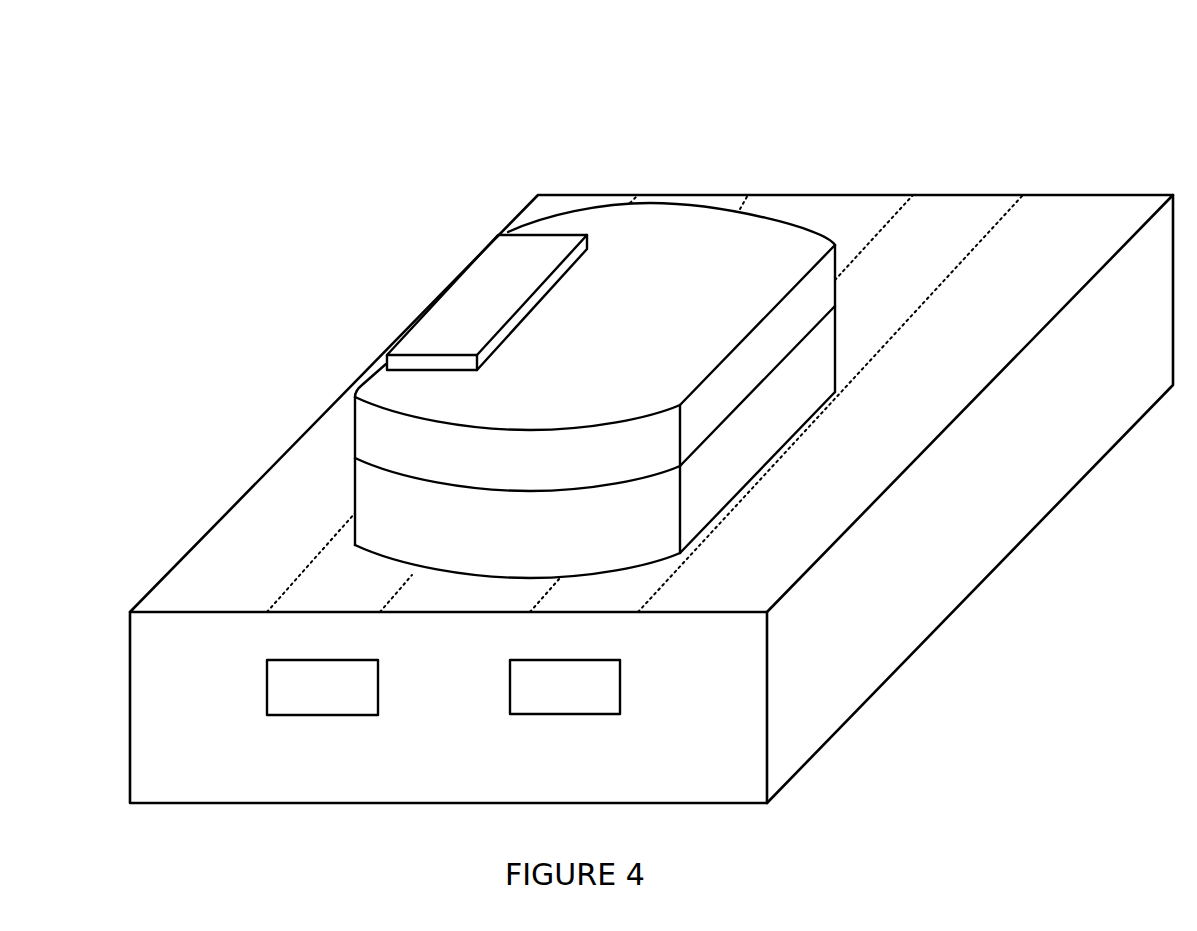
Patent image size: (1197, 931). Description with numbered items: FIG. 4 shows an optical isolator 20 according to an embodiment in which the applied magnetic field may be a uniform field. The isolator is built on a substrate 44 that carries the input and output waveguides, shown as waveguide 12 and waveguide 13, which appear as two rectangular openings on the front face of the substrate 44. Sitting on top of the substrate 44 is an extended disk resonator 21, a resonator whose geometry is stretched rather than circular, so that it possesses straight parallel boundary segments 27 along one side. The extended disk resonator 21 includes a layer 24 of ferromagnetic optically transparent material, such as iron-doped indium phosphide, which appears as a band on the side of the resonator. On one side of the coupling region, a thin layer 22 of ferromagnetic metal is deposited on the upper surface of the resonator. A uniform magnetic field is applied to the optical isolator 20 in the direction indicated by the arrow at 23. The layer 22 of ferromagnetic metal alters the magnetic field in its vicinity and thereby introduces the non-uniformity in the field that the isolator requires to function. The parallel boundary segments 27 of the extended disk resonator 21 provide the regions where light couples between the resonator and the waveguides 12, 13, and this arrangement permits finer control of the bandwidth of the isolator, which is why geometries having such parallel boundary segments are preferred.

The optical isolator 20 is at (262, 106).
The extended disk resonator 21 is at (632, 390).
The layer of ferromagnetic metal 22 is at (543, 272).
The arrow indicating direction of applied magnetic field 23 is at (629, 328).
The layer of ferromagnetic optically transparent material 24 is at (747, 364).
The parallel boundary segments 27 is at (760, 450).
The substrate 44 is at (941, 623).
The waveguide 12 is at (330, 703).
The waveguide 13 is at (543, 703).